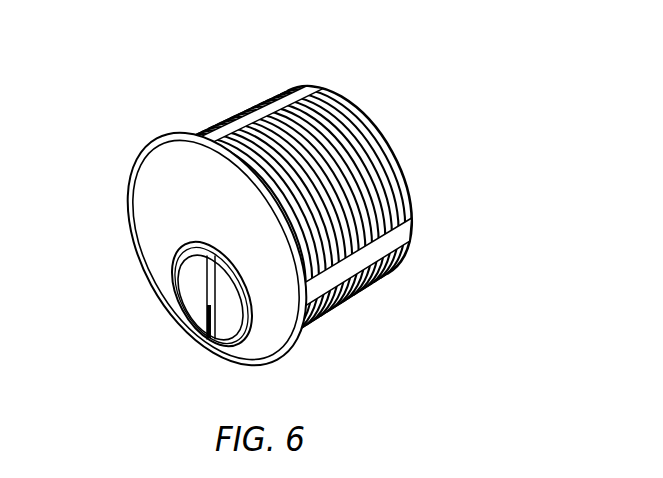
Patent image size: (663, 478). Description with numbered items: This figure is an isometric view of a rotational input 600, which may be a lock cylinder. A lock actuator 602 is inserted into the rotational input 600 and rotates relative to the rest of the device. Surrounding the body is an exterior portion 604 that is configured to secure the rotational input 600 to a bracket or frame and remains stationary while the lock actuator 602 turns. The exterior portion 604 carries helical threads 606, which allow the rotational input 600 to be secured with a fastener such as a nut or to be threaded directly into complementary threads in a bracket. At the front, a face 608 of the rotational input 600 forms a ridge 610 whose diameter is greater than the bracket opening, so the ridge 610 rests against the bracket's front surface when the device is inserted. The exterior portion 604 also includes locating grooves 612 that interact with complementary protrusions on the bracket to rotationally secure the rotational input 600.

The rotational input 600 is at (285, 204).
The lock actuator 602 is at (193, 290).
The exterior portion 604 is at (238, 110).
The helical threads 606 is at (412, 236).
The face 608 is at (167, 227).
The ridge 610 is at (165, 142).
The locating grooves 612 is at (331, 99).